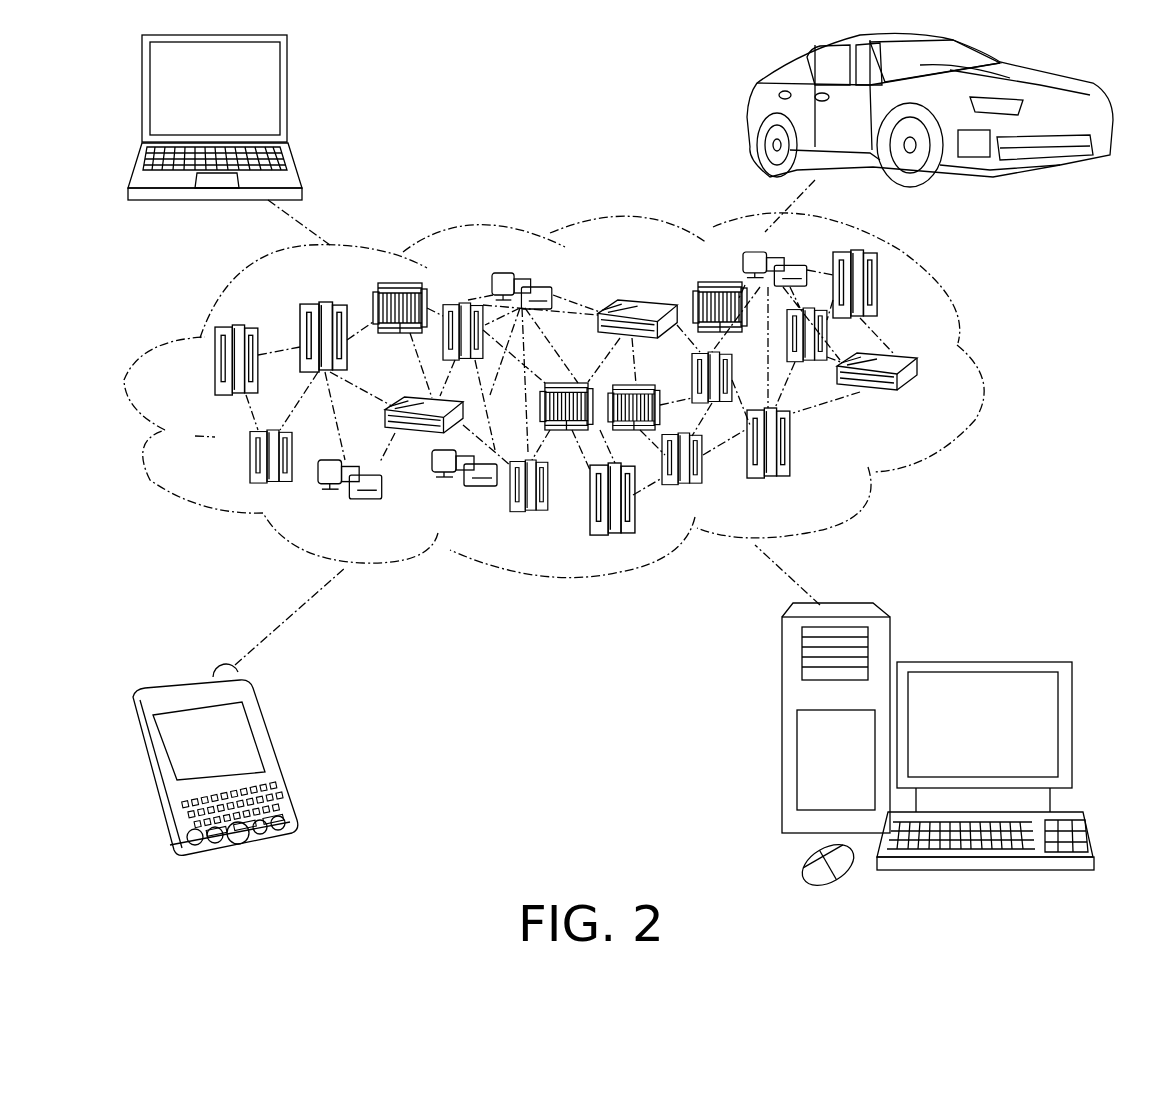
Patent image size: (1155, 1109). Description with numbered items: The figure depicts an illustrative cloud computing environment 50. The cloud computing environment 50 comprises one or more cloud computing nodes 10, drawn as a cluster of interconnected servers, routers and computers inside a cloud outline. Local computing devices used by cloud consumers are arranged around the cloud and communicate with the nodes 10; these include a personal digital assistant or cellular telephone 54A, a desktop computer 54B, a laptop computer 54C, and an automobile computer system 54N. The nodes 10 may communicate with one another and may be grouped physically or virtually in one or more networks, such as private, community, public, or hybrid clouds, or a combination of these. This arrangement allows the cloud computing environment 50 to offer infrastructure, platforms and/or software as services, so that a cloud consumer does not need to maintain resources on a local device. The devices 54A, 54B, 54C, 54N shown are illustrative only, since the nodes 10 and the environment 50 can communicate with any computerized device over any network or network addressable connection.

The cloud computing environment 50 is at (988, 368).
The cloud computing node 10 is at (920, 402).
The personal digital assistant or cellular telephone 54A is at (273, 752).
The desktop computer 54B is at (980, 662).
The laptop computer 54C is at (286, 97).
The automobile computer system 54N is at (748, 113).